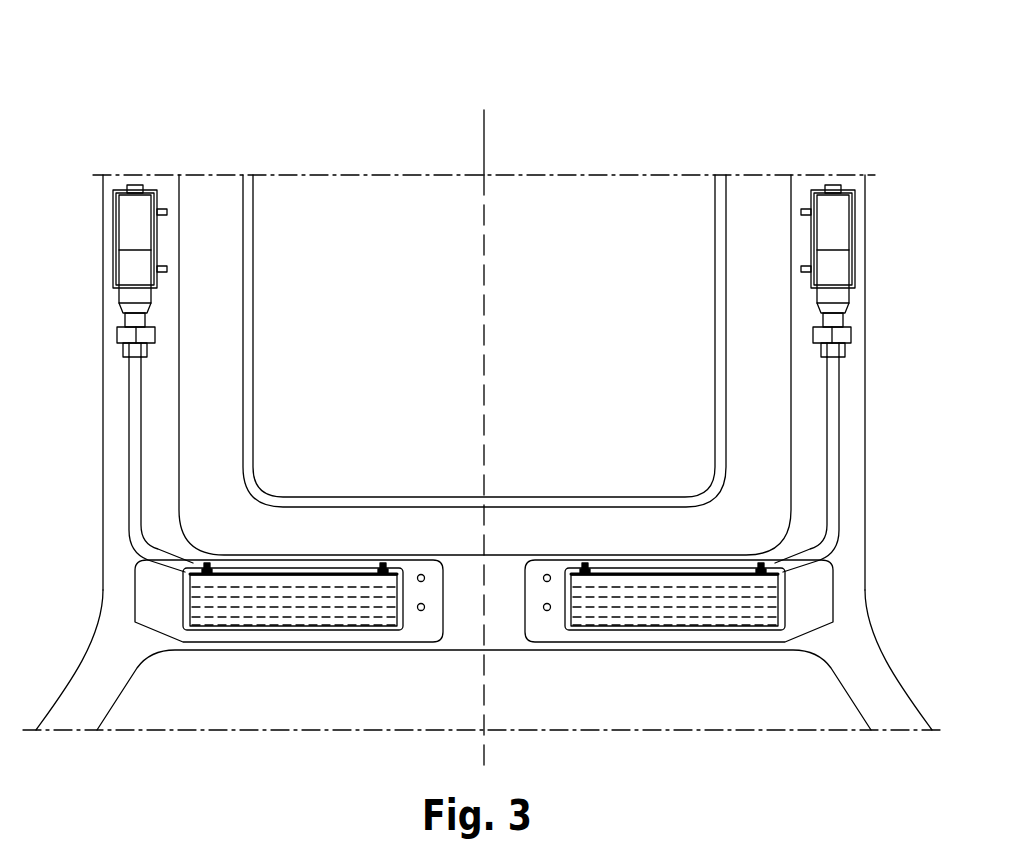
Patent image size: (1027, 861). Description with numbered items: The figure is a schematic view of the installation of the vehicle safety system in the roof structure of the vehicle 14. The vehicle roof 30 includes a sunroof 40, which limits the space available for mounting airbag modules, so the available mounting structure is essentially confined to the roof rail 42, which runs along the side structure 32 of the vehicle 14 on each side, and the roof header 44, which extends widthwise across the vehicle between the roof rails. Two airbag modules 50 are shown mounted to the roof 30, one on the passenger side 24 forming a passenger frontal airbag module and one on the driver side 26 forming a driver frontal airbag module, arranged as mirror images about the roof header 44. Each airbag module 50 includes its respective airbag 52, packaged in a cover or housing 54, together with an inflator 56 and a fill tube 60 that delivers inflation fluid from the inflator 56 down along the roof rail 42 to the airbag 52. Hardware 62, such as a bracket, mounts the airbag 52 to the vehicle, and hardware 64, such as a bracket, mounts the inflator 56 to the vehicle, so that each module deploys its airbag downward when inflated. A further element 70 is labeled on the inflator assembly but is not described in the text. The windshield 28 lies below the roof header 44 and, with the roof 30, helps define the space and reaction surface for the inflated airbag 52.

The vehicle 14 is at (150, 88).
The passenger side 24 is at (316, 148).
The driver side 26 is at (599, 155).
The windshield 28 is at (173, 690).
The vehicle roof 30 is at (212, 210).
The side structure 32 is at (103, 395).
The sunroof 40 is at (408, 272).
The roof rail 42 is at (123, 378).
The roof header 44 is at (505, 635).
The airbag module 50 is at (82, 512).
The airbag 52 is at (240, 605).
The cover or housing 54 is at (317, 615).
The inflator 56 is at (137, 225).
The fill tube 60 is at (138, 452).
The airbag mounting hardware 62 is at (157, 237).
The inflator mounting hardware 64 is at (302, 573).
The sensor housing 70 is at (128, 270).